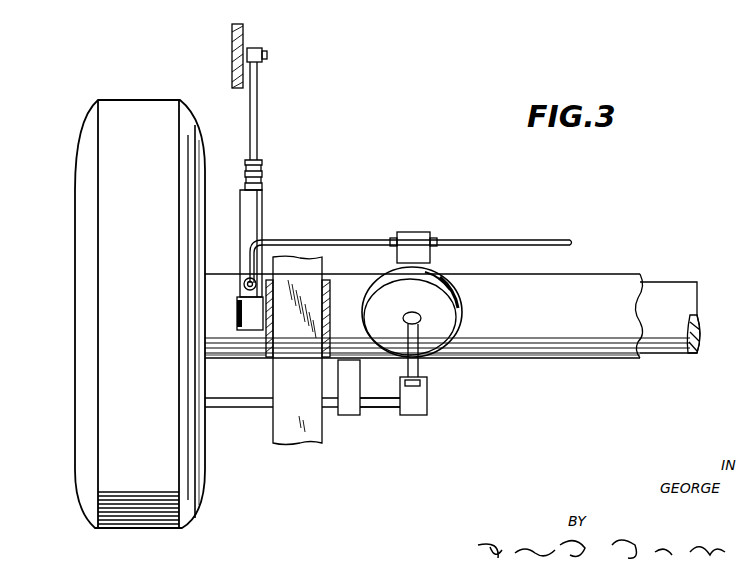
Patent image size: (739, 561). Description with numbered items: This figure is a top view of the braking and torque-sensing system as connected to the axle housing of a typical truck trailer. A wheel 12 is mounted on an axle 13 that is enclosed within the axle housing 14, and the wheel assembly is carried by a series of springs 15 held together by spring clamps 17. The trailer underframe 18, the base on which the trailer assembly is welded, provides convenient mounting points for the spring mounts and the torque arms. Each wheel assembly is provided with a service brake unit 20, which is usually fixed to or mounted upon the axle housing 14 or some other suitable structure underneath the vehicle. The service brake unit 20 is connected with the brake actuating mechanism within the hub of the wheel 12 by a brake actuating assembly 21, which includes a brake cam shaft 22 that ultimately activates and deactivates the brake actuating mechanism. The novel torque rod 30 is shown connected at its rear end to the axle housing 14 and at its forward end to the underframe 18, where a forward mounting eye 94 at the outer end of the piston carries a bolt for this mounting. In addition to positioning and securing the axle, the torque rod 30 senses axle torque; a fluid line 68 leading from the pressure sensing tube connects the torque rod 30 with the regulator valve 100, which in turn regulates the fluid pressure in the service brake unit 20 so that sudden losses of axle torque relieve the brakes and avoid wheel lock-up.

The wheel 12 is at (88, 246).
The axle 13 is at (683, 302).
The axle housing 14 is at (625, 285).
The spring 15 is at (300, 446).
The spring clamp 17 is at (268, 350).
The underframe 18 is at (232, 32).
The service brake unit 20 is at (445, 333).
The brake actuating assembly 21 is at (437, 406).
The brake cam shaft 22 is at (376, 407).
The torque rod 30 is at (275, 198).
The fluid line 68 is at (300, 241).
The forward mounting eye 94 is at (252, 48).
The regulator valve 100 is at (429, 224).